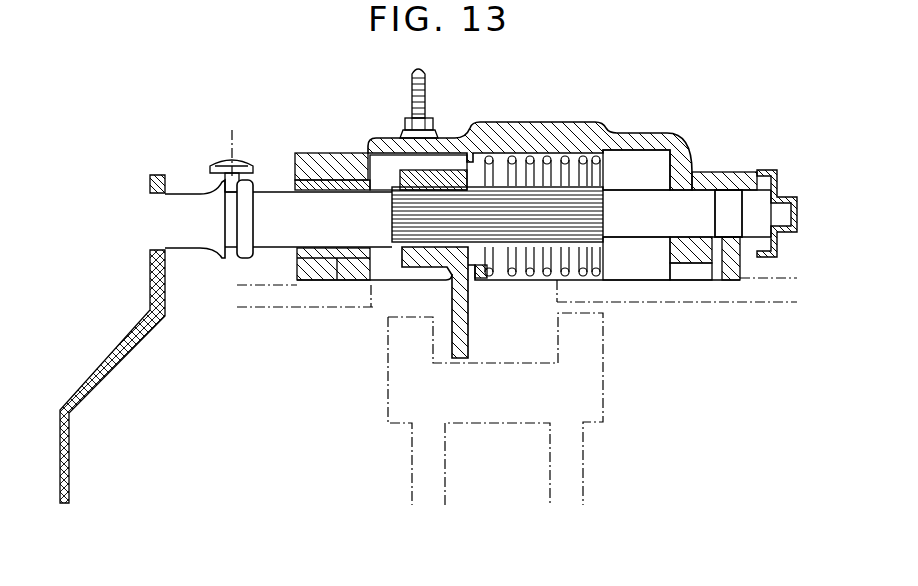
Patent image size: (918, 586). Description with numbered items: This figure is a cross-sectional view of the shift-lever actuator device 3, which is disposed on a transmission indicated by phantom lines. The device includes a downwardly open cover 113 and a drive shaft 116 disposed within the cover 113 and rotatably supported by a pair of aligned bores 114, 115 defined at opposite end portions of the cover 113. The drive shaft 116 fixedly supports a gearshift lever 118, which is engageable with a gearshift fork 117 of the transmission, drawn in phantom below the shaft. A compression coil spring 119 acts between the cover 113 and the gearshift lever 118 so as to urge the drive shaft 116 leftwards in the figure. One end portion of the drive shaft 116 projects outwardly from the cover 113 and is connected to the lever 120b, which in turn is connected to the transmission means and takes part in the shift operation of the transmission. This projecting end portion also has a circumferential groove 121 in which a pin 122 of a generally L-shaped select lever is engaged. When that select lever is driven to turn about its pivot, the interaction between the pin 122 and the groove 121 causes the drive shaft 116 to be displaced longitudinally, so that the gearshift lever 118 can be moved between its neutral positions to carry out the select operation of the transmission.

The shift-lever actuator device 3 is at (361, 128).
The cover 113 is at (580, 125).
The bore 114 is at (760, 203).
The bore 115 is at (337, 282).
The drive shaft 116 is at (688, 203).
The gearshift fork 117 is at (604, 378).
The gearshift lever 118 is at (470, 345).
The compression coil spring 119 is at (533, 280).
The lever 120b is at (68, 462).
The circumferential groove 121 is at (236, 260).
The pin 122 is at (229, 151).